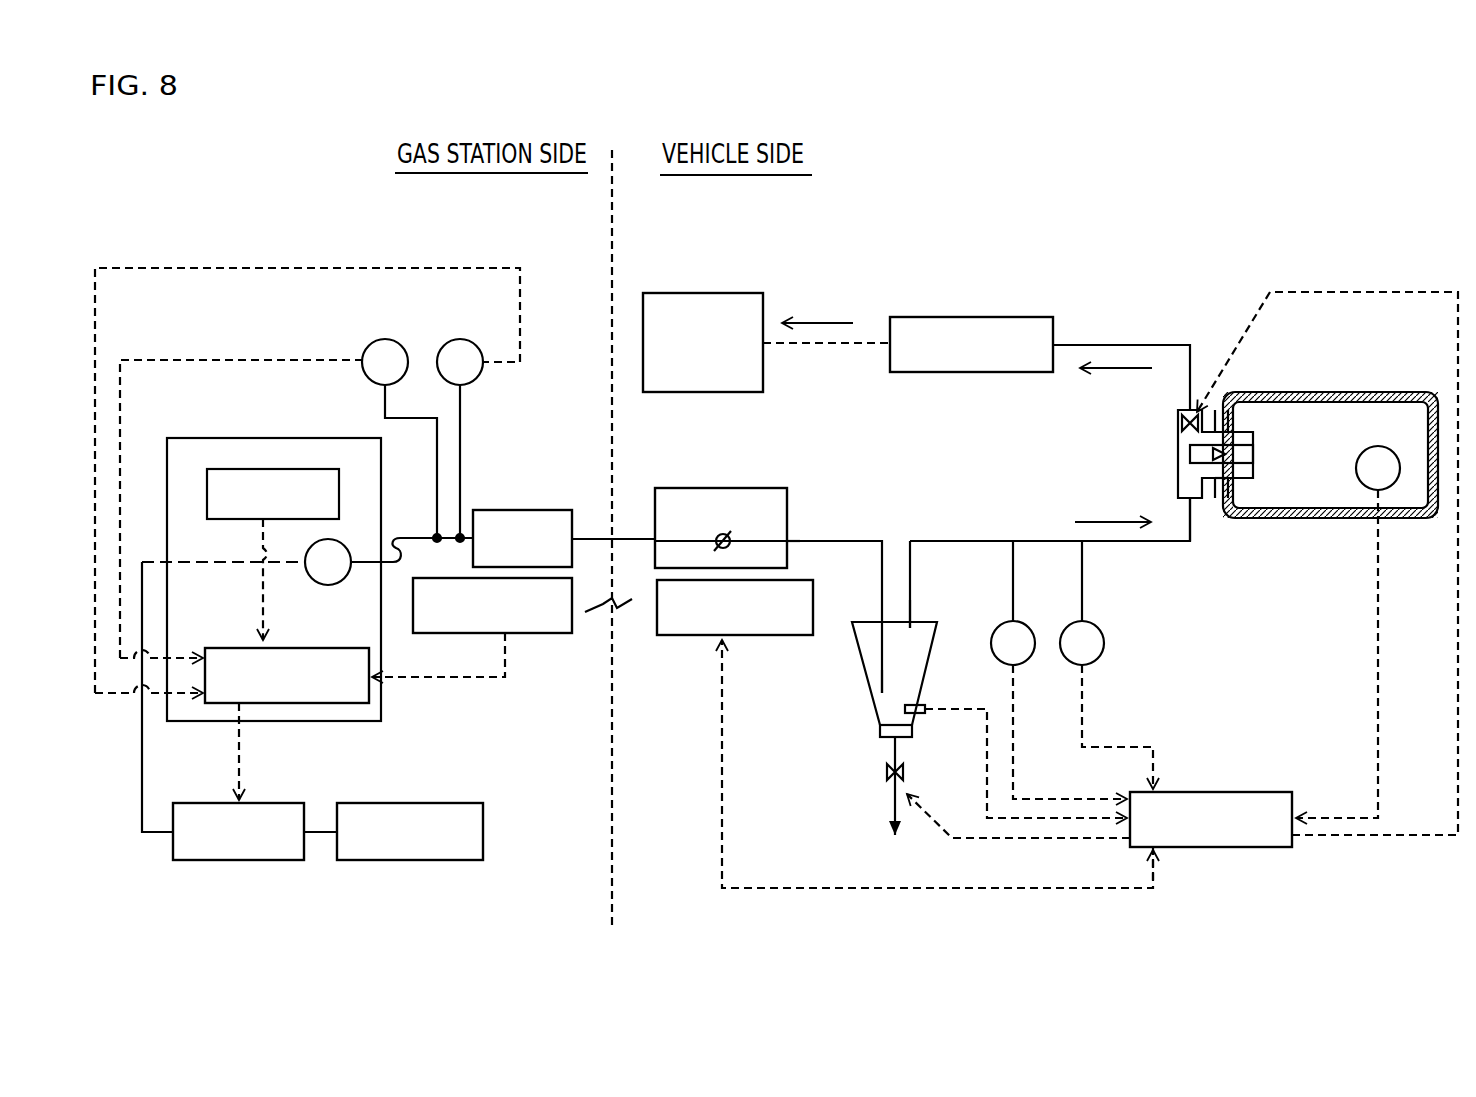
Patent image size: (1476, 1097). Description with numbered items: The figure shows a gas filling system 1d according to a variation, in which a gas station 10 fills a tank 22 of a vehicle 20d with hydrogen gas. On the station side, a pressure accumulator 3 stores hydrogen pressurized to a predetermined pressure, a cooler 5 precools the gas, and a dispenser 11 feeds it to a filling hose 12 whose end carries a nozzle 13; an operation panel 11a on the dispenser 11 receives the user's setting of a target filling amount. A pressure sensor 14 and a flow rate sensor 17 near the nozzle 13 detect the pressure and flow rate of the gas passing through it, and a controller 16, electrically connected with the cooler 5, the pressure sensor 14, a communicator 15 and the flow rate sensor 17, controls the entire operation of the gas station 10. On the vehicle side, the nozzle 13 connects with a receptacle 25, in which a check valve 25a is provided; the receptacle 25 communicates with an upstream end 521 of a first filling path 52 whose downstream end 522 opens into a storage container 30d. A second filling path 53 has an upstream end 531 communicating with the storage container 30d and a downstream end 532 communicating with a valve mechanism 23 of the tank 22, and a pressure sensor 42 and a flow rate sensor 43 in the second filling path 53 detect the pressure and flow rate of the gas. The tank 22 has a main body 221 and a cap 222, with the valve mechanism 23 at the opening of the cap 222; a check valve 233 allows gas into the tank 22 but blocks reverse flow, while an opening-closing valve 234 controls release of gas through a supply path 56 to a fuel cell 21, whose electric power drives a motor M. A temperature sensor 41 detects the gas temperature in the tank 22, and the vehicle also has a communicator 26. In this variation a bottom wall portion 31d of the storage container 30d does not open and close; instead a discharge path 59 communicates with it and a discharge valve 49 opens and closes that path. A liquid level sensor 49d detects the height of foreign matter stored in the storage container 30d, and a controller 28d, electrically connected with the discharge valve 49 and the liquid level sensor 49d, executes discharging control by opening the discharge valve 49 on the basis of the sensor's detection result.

The gas station 10 is at (330, 255).
The dispenser 11 is at (245, 438).
The operation panel 11a is at (275, 469).
The filling hose 12 is at (423, 536).
The nozzle 13 is at (530, 510).
The pressure sensor 14 is at (472, 340).
The communicator 15 is at (545, 633).
The controller 16 is at (330, 648).
The flow rate sensor 17 is at (396, 340).
The cooler 5 is at (266, 803).
The pressure accumulator 3 is at (430, 803).
The motor M is at (725, 293).
The system 1d is at (1322, 228).
The vehicle 20d is at (1080, 273).
The fuel cell 21 is at (1013, 317).
The tank 22 is at (1330, 418).
The main body 221 is at (1293, 392).
The cap 222 is at (1228, 498).
The valve mechanism 23 is at (1206, 489).
The check valve 233 is at (1226, 463).
The opening-closing valve 234 is at (1177, 420).
The receptacle 25 is at (705, 497).
The check valve 25a is at (716, 538).
The communicator 26 is at (813, 593).
The controller 28d is at (1270, 792).
The storage container 30d is at (852, 658).
The bottom wall portion 31d is at (880, 732).
The temperature sensor 41 is at (1395, 455).
The pressure sensor 42 is at (1025, 622).
The flow rate sensor 43 is at (1092, 622).
The discharge valve 49 is at (888, 778).
The liquid level sensor 49d is at (925, 705).
The first filling path 52 is at (833, 597).
The upstream end 521 is at (792, 540).
The downstream end 522 is at (882, 693).
The second filling path 53 is at (1064, 544).
The upstream end 531 is at (917, 628).
The downstream end 532 is at (1190, 500).
The supply path 56 is at (1127, 345).
The discharge path 59 is at (898, 750).